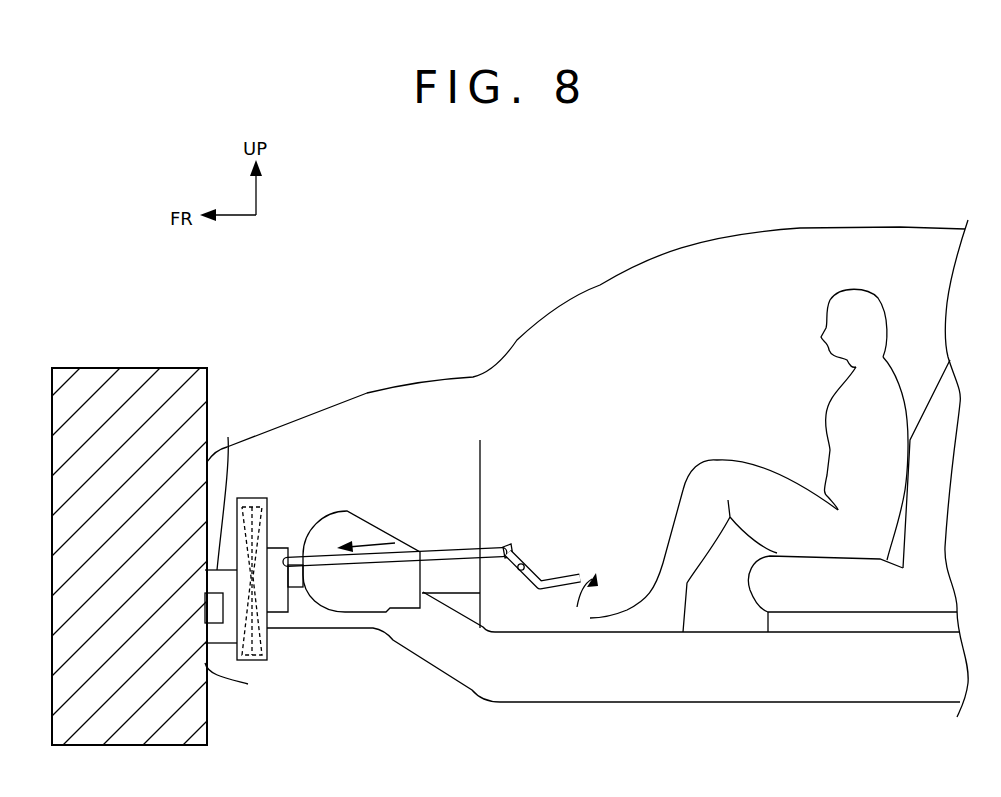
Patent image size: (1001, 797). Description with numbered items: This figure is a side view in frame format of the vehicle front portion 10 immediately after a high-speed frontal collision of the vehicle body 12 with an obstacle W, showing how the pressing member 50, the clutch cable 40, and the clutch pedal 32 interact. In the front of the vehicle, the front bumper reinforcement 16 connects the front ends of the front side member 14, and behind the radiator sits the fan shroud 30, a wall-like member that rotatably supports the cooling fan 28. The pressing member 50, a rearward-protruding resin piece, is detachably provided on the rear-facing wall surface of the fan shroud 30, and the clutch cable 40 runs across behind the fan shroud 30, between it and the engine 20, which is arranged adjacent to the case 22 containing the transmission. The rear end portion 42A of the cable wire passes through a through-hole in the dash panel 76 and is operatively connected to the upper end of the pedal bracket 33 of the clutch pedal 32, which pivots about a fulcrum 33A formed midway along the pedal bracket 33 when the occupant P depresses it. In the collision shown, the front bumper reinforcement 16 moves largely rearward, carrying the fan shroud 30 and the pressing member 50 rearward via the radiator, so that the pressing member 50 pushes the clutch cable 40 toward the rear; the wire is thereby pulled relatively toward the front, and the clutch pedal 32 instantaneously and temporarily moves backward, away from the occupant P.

The vehicle body 12 is at (700, 231).
The front bumper reinforcement 16 is at (223, 526).
The cooling fan 28 is at (259, 662).
The fan shroud 30 is at (252, 498).
The pressing member 50 is at (300, 598).
The vehicle front portion 10 is at (295, 540).
The engine 20 is at (361, 536).
The case 22 is at (346, 511).
The clutch cable 40 is at (443, 550).
The rear end portion 42A is at (508, 546).
The pedal bracket 33 is at (519, 555).
The fulcrum 33A is at (527, 563).
The clutch pedal 32 is at (587, 573).
The front side member 14 is at (333, 620).
The dash panel 76 is at (482, 462).
The obstacle W is at (140, 368).
The occupant P is at (857, 288).